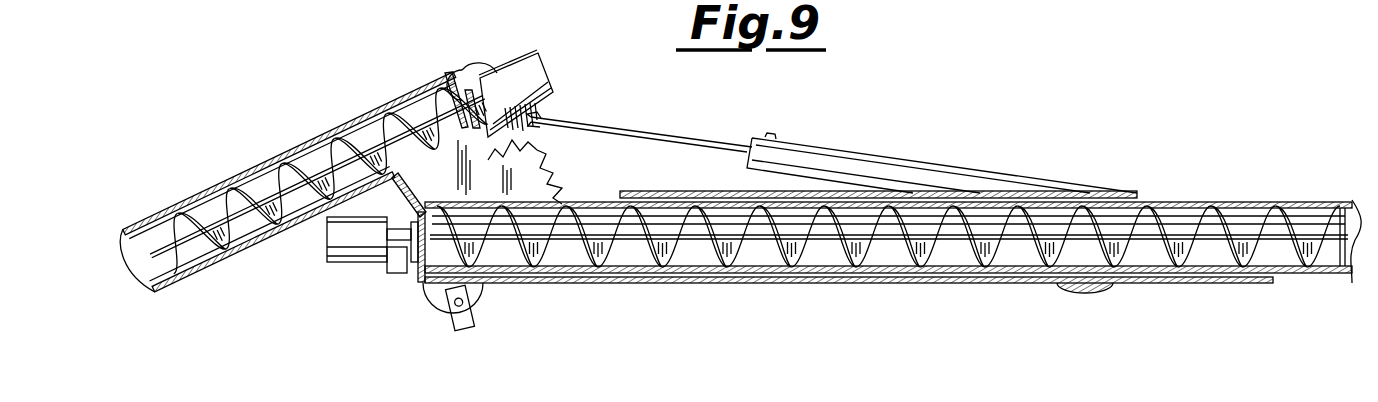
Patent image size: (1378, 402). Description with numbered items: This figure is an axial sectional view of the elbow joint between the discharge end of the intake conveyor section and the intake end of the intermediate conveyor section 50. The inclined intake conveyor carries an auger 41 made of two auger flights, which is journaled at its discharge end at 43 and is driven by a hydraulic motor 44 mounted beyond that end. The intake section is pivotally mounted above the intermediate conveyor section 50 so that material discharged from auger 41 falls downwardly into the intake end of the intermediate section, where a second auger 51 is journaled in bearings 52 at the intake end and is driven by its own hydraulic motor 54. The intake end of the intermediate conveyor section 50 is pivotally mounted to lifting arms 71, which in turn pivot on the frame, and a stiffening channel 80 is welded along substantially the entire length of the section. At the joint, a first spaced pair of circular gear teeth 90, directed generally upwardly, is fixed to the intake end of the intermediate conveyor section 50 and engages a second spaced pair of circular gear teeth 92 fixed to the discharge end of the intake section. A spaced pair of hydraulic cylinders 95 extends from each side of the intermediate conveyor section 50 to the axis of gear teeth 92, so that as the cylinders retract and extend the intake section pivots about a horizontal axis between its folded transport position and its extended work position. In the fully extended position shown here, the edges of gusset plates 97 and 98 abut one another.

The auger 41 is at (232, 193).
The discharge end journal 43 is at (438, 78).
The hydraulic motor 44 is at (517, 62).
The intermediate conveyor section 50 is at (952, 291).
The auger 51 is at (785, 262).
The bearings 52 is at (420, 267).
The hydraulic motor 54 is at (350, 252).
The lifting arms 71 is at (475, 313).
The stiffening channel 80 is at (1193, 283).
The first spaced pair of circular gear teeth 90 is at (562, 178).
The second spaced pair of circular gear teeth 92 is at (537, 122).
The hydraulic cylinders 95 is at (873, 163).
The gusset plate 97 is at (385, 114).
The gusset plate 98 is at (493, 187).